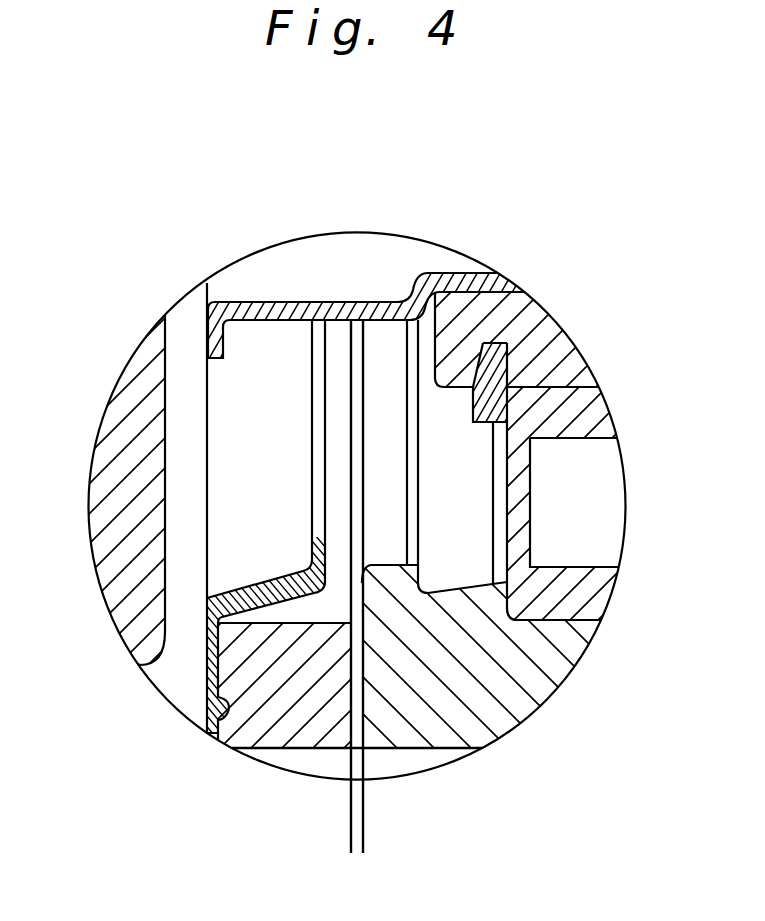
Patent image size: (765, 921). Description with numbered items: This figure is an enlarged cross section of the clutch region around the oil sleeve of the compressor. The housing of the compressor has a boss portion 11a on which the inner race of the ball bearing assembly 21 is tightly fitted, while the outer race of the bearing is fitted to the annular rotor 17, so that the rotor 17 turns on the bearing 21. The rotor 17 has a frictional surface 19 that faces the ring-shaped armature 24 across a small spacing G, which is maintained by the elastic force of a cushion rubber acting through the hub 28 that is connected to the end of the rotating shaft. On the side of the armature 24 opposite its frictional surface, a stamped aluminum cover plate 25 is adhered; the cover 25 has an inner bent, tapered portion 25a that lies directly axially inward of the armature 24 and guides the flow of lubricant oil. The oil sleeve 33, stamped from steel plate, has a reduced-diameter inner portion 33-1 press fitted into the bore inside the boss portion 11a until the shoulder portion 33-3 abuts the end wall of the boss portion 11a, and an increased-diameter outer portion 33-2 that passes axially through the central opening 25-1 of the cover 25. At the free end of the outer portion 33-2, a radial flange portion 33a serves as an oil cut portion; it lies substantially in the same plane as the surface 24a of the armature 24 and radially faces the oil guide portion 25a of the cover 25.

The boss portion 11a is at (550, 351).
The rotor 17 is at (546, 683).
The frictional surface 19 is at (363, 700).
The ball bearing assembly 21 is at (593, 599).
The armature 24 is at (242, 683).
The surface of the armature 24a is at (208, 731).
The cover plate 25 is at (263, 520).
The central opening 25-1 is at (320, 540).
The inner bent portion 25a is at (258, 582).
The hub 28 is at (112, 560).
The oil sleeve 33 is at (341, 227).
The inner portion 33-1 is at (468, 283).
The outer portion 33-2 is at (340, 302).
The shoulder portion 33-3 is at (418, 296).
The flange portion 33a is at (207, 340).
The spacing G is at (410, 836).